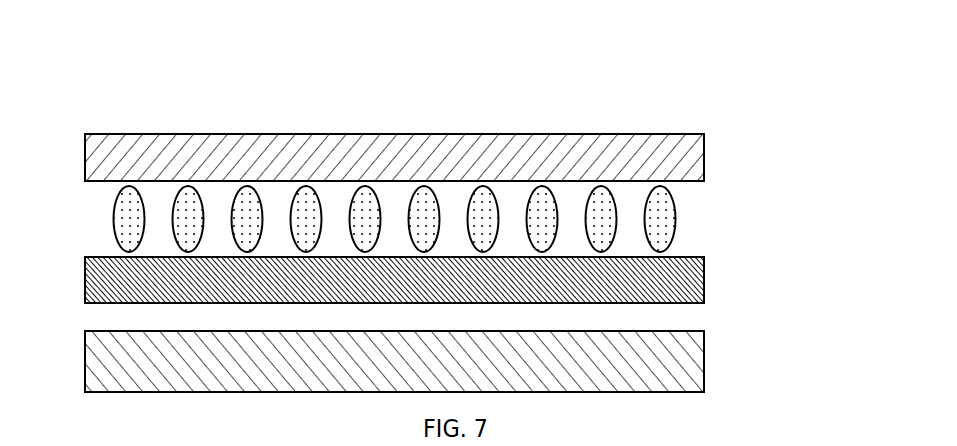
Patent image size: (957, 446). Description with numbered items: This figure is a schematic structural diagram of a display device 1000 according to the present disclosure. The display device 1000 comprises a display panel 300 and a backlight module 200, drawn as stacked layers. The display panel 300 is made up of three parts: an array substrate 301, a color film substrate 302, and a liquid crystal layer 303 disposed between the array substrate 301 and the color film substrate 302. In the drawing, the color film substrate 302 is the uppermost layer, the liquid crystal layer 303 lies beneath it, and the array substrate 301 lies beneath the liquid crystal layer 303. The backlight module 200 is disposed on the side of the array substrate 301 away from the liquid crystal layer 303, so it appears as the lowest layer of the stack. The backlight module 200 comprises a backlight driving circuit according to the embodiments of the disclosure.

The display device 1000 is at (156, 80).
The display panel 300 is at (814, 157).
The color film substrate 302 is at (704, 157).
The liquid crystal layer 303 is at (706, 216).
The array substrate 301 is at (705, 282).
The backlight module 200 is at (705, 364).